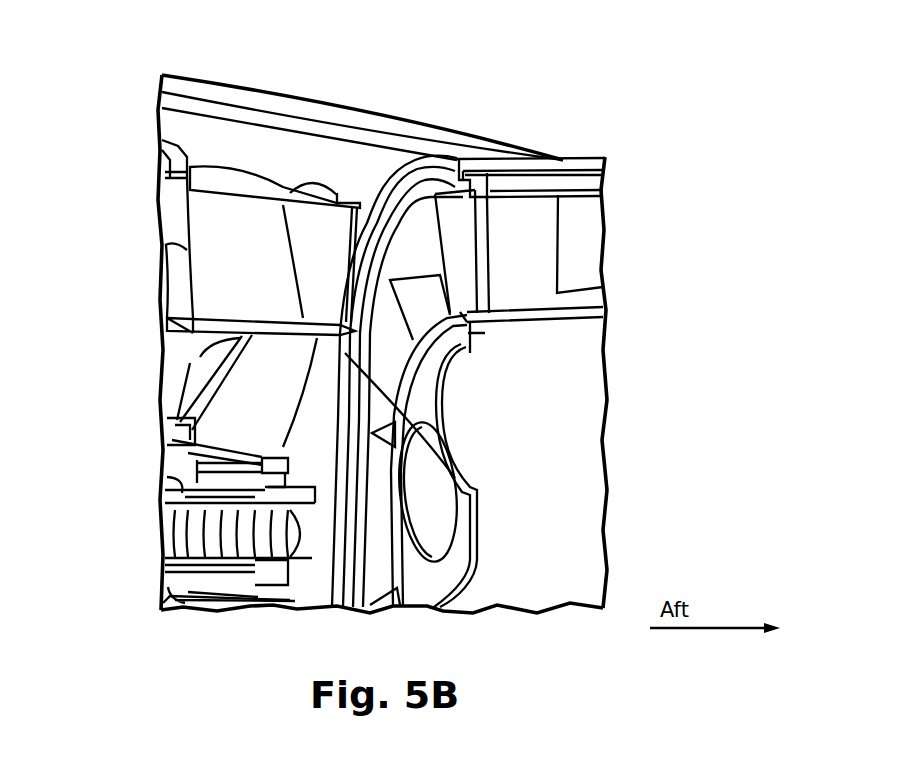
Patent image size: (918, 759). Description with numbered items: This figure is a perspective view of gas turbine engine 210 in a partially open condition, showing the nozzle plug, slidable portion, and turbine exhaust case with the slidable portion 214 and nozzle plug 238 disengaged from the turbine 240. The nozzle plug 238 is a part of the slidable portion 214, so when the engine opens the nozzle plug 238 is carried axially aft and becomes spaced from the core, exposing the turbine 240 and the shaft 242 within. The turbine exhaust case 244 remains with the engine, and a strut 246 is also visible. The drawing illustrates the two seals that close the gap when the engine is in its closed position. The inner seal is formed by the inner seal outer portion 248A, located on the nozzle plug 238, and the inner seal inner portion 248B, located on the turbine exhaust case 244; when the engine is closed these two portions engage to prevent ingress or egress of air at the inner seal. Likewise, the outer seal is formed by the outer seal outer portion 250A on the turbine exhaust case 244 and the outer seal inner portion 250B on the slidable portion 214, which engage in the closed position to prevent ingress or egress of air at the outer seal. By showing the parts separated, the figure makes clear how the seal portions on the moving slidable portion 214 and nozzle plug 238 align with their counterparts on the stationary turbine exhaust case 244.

The gas turbine engine 210 is at (623, 110).
The slidable portion 214 is at (487, 116).
The nozzle plug 238 is at (555, 576).
The turbine 240 is at (213, 605).
The shaft 242 is at (300, 540).
The turbine exhaust case 244 is at (252, 228).
The strut 246 is at (537, 268).
The inner seal outer portion 248A is at (475, 347).
The inner seal inner portion 248B is at (352, 208).
The outer seal outer portion 250A is at (495, 318).
The outer seal inner portion 250B is at (352, 335).